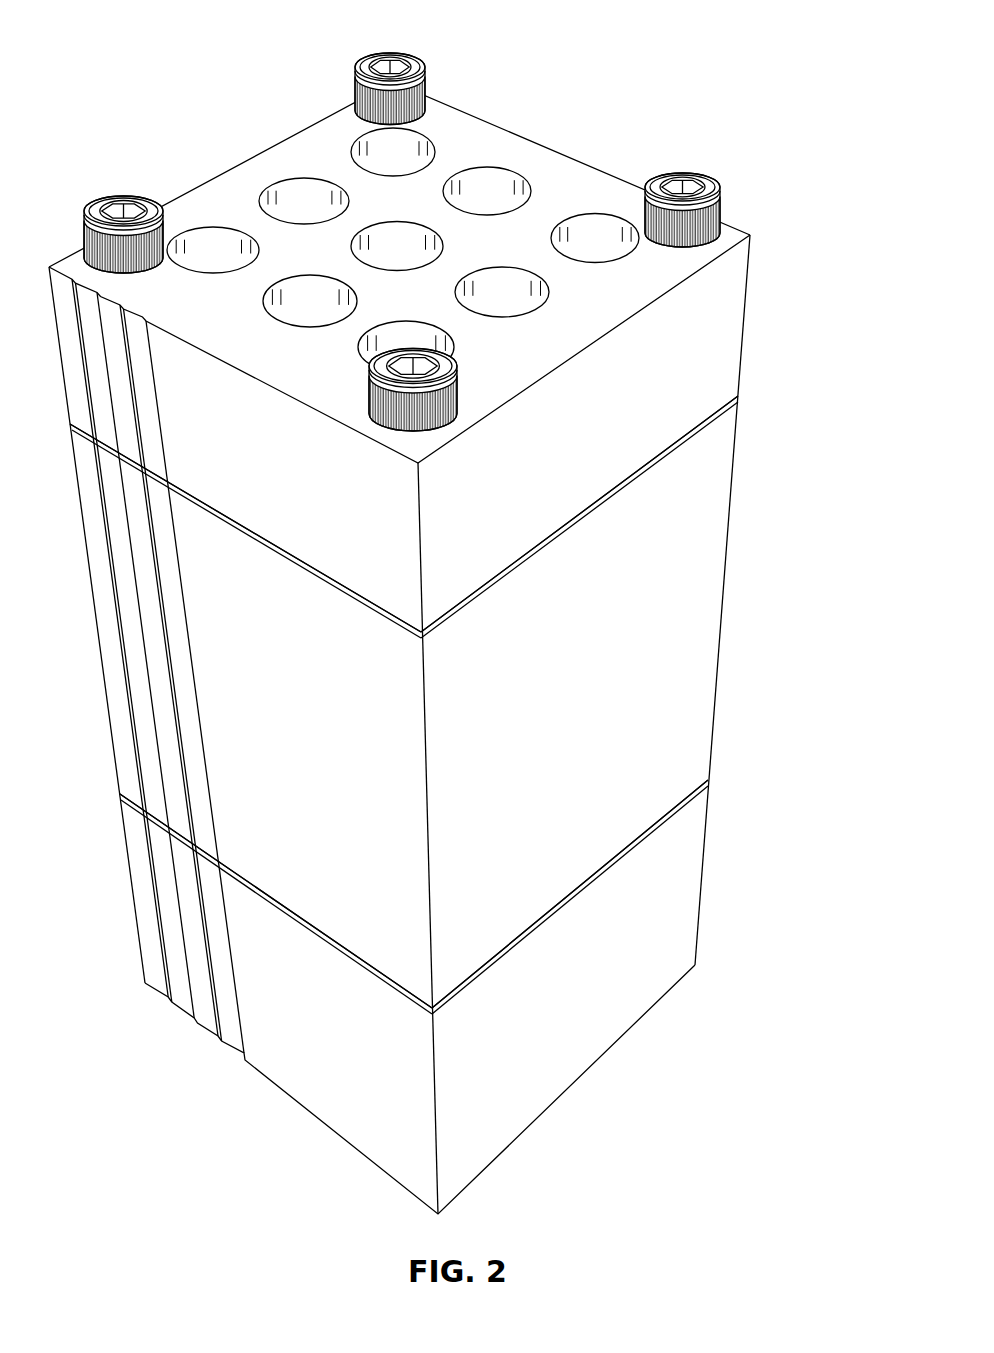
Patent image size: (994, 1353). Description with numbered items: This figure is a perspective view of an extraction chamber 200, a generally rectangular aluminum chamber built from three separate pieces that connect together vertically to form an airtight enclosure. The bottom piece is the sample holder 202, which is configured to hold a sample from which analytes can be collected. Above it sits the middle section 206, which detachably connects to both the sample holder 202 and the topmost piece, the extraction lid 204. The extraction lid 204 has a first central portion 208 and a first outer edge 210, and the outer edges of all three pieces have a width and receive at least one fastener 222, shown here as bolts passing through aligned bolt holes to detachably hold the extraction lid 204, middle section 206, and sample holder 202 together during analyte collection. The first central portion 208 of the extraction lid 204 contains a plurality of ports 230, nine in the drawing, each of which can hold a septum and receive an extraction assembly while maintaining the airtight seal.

The extraction chamber 200 is at (445, 633).
The sample holder 202 is at (705, 870).
The extraction lid 204 is at (439, 357).
The middle section 206 is at (722, 602).
The first central portion 208 is at (399, 272).
The first outer edge 210 is at (399, 174).
The fastener 222 is at (114, 196).
The ports 230 is at (445, 240).